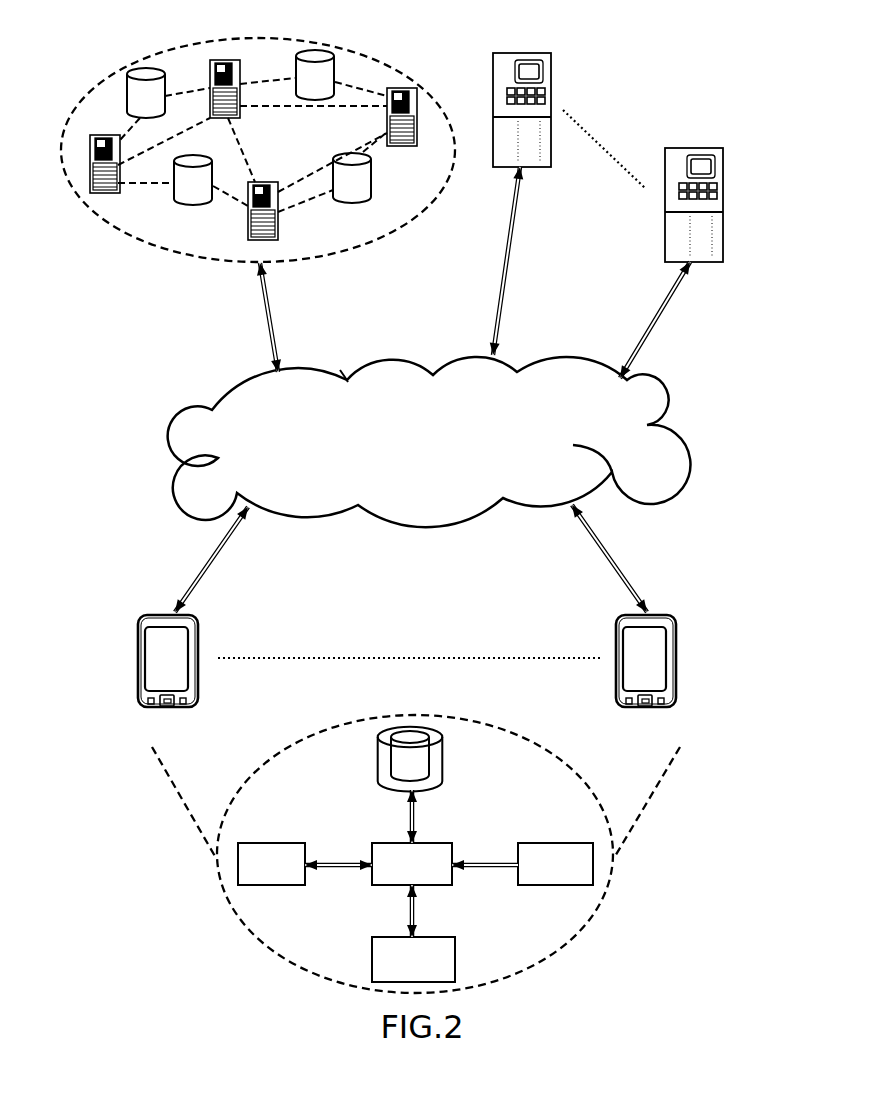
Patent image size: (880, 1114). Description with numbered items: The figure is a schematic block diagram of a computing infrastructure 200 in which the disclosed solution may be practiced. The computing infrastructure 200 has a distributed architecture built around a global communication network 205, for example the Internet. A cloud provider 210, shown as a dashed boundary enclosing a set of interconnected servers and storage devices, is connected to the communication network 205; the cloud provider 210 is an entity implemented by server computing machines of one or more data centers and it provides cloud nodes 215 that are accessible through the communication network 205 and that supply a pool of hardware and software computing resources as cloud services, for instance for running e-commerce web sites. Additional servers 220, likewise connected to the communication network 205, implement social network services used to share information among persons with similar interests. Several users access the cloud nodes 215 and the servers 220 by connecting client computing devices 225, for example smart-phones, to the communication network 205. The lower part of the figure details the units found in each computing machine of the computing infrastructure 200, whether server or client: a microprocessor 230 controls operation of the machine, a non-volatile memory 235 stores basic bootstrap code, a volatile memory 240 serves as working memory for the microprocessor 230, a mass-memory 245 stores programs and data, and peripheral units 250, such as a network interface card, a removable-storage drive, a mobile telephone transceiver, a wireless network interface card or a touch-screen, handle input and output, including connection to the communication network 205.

The computing infrastructure 200 is at (176, 939).
The communication network 205 is at (228, 385).
The cloud provider 210 is at (258, 136).
The cloud node 215 is at (230, 209).
The server 220 is at (515, 53).
The client computing device 225 is at (160, 613).
The microprocessor 230 is at (432, 843).
The non-volatile memory 235 is at (565, 885).
The volatile memory 240 is at (273, 843).
The mass-memory 245 is at (378, 758).
The peripheral unit 250 is at (372, 958).